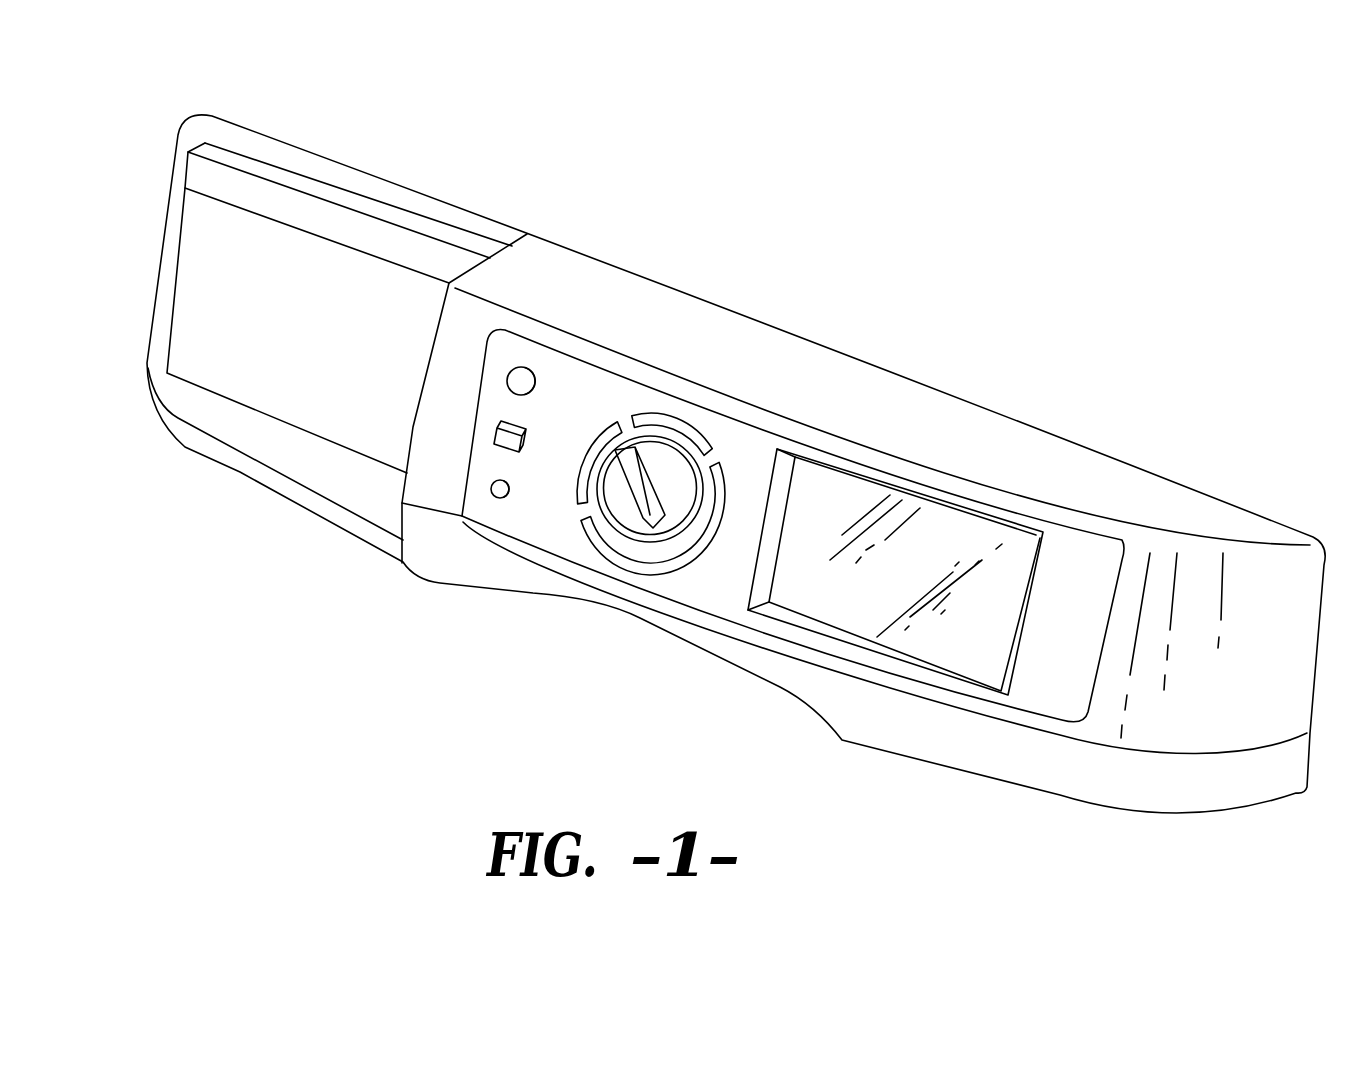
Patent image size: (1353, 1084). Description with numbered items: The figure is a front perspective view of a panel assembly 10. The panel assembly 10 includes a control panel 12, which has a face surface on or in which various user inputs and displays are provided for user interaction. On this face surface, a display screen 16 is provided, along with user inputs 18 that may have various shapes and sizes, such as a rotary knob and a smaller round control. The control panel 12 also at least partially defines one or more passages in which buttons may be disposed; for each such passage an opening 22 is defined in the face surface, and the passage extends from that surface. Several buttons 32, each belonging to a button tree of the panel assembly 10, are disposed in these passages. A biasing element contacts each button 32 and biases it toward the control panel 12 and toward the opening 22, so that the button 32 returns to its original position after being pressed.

The panel assembly 10 is at (985, 331).
The control panel 12 is at (1023, 461).
The display screen 16 is at (830, 598).
The user inputs 18 is at (490, 498).
The opening 22 is at (511, 358).
The button 32 is at (518, 378).